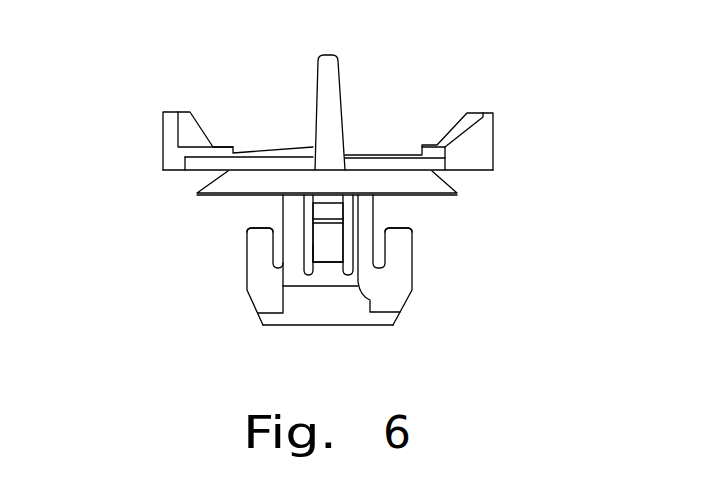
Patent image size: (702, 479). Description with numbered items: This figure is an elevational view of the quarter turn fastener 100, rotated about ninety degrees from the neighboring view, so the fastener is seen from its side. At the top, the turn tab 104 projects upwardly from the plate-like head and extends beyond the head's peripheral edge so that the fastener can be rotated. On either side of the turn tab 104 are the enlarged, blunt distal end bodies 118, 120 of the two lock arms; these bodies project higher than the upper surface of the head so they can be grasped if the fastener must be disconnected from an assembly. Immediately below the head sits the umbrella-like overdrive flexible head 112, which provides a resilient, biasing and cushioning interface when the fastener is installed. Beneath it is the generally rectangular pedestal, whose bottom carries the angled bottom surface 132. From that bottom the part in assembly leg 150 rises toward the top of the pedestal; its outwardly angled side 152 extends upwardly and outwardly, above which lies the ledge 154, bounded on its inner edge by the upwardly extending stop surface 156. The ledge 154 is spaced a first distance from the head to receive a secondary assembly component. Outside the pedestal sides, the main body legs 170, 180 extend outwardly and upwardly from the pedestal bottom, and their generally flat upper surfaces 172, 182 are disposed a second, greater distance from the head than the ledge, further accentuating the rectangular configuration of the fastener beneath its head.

The quarter turn fastener 100 is at (140, 79).
The turn tab 104 is at (332, 67).
The overdrive flexible head 112 is at (430, 177).
The distal end body 118 is at (165, 128).
The distal end body 120 is at (487, 132).
The angled bottom surface 132 is at (315, 312).
The part in assembly leg 150 is at (313, 250).
The outwardly angled side 152 is at (327, 243).
The ledge 154 is at (338, 208).
The stop surface 156 is at (327, 207).
The main body leg 170 is at (250, 253).
The flat upper surface 172 is at (262, 228).
The main body leg 180 is at (397, 258).
The flat upper surface 182 is at (398, 232).